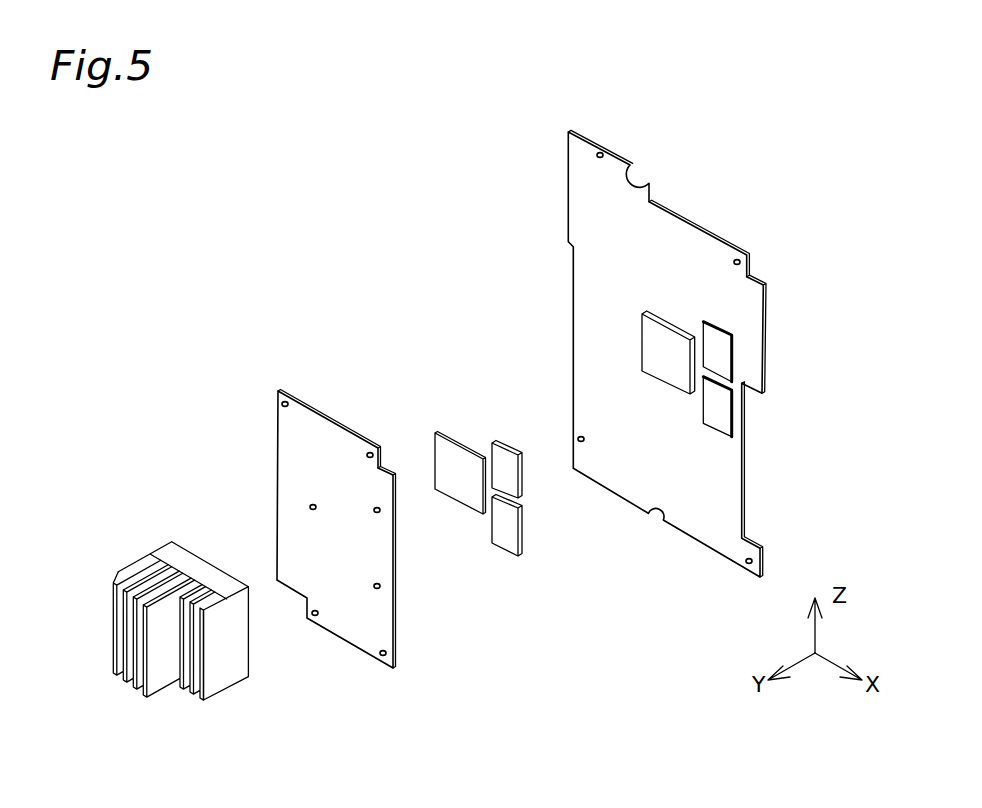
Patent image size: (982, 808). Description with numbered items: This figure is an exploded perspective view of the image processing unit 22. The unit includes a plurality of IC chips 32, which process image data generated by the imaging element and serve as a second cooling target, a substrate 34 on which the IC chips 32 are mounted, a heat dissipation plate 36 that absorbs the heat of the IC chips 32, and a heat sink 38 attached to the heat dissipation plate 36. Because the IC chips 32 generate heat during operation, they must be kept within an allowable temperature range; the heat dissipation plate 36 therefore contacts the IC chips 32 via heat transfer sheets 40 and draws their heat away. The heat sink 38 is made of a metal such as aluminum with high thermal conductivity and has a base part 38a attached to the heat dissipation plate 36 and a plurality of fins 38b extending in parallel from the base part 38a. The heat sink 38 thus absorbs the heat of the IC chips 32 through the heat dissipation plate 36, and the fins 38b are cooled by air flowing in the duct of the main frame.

The image processing unit 22 is at (274, 295).
The IC chips 32 is at (705, 328).
The substrate 34 is at (588, 263).
The heat dissipation plate 36 is at (288, 448).
The heat sink 38 is at (170, 614).
The base part 38a is at (190, 558).
The fins 38b is at (125, 652).
The heat transfer sheets 40 is at (492, 452).